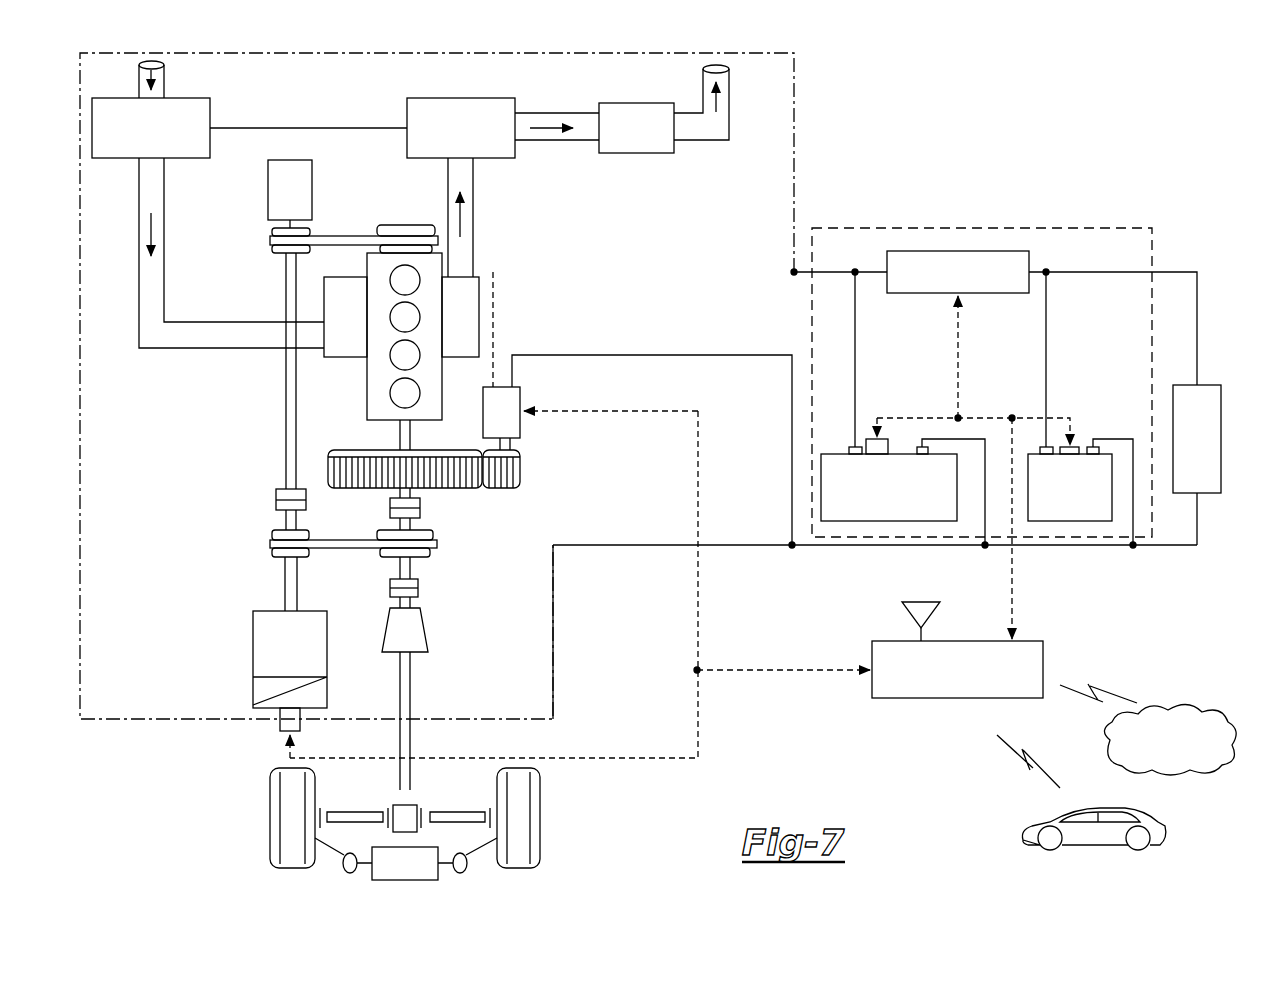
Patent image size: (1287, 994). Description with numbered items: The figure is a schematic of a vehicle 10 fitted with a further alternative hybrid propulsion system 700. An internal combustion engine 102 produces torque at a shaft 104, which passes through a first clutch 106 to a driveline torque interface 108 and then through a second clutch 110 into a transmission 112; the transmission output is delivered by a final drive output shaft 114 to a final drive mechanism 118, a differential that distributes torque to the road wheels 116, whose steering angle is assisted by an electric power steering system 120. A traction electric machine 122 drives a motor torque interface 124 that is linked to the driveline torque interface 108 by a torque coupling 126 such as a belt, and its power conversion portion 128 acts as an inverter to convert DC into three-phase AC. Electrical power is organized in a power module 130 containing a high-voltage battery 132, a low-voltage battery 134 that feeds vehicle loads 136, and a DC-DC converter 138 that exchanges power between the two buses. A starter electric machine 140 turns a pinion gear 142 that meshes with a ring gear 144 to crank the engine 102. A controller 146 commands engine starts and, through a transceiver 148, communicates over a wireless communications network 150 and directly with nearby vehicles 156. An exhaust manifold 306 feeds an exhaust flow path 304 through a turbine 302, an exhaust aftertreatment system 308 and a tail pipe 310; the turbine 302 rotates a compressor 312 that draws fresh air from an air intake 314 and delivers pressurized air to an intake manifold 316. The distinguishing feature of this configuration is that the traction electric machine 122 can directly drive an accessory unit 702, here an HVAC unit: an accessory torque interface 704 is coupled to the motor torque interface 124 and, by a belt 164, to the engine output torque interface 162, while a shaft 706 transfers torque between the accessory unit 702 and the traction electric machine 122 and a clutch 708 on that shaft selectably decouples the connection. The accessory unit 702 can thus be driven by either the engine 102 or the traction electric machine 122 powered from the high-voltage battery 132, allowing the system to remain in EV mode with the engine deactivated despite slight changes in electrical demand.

The vehicle 10 is at (948, 152).
The propulsion system 700 is at (185, 407).
The internal combustion engine 102 is at (372, 388).
The shaft 104 is at (400, 440).
The first clutch 106 is at (390, 508).
The driveline torque interface 108 is at (436, 548).
The second clutch 110 is at (420, 590).
The transmission 112 is at (428, 627).
The final drive output shaft 114 is at (410, 737).
The road wheels 116 is at (270, 818).
The final drive mechanism 118 is at (398, 812).
The electric power steering system 120 is at (382, 882).
The traction electric machine 122 is at (290, 659).
The motor torque interface 124 is at (272, 535).
The torque coupling 126 is at (335, 548).
The power conversion portion 128 is at (253, 690).
The power module 130 is at (1075, 228).
The high-voltage battery 132 is at (903, 408).
The low-voltage battery 134 is at (1005, 408).
The vehicle loads 136 is at (887, 552).
The DC-DC converter 138 is at (994, 334).
The starter electric machine 140 is at (542, 515).
The pinion gear 142 is at (520, 468).
The ring gear 144 is at (448, 490).
The controller 146 is at (917, 603).
The transceiver 148 is at (900, 612).
The wireless communications network 150 is at (1207, 710).
The vehicles 156 is at (1160, 830).
The engine output torque interface 162 is at (405, 225).
The belt 164 is at (348, 236).
The turbine 302 is at (503, 128).
The exhaust flow path 304 is at (473, 222).
The exhaust manifold 306 is at (460, 317).
The exhaust aftertreatment system 308 is at (664, 111).
The tail pipe 310 is at (703, 80).
The compressor 312 is at (249, 223).
The air intake 314 is at (165, 80).
The intake manifold 316 is at (345, 317).
The accessory unit 702 is at (290, 194).
The accessory torque interface 704 is at (272, 232).
The shaft 706 is at (286, 448).
The clutch 708 is at (276, 497).